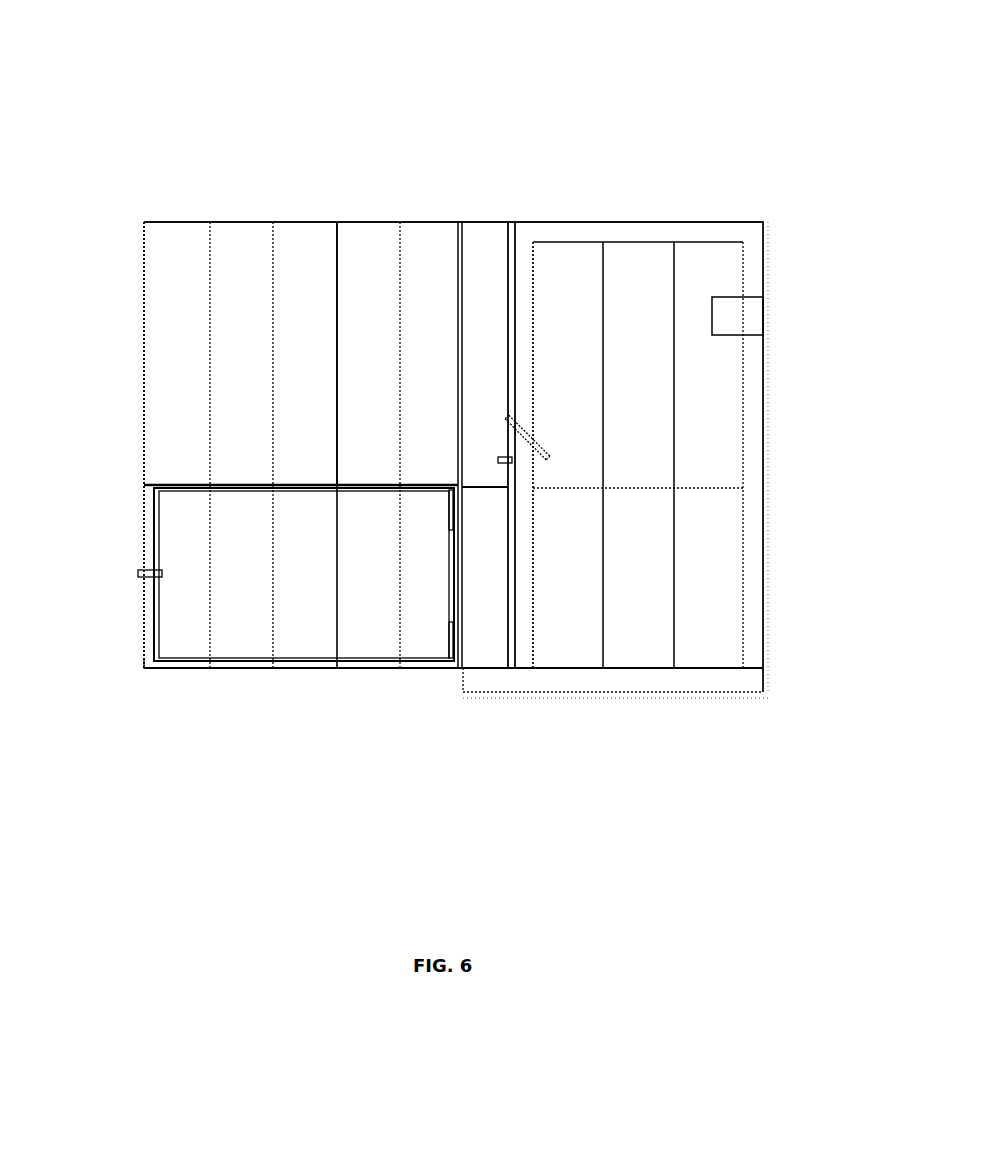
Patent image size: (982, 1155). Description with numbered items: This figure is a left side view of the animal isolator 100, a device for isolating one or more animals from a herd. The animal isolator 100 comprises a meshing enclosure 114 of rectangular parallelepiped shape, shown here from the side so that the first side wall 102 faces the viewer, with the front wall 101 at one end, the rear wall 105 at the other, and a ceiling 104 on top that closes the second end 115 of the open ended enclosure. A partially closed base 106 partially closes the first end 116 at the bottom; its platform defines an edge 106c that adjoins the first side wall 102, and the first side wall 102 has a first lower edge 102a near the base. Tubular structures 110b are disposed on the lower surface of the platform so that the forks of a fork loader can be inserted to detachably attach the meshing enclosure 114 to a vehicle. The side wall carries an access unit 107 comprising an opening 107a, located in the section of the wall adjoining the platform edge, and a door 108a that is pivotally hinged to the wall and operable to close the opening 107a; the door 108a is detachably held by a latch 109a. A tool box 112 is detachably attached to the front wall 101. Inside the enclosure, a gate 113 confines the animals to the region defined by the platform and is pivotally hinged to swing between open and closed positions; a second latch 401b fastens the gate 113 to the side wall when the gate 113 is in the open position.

The animal isolator 100 is at (414, 72).
The front wall 101 is at (758, 552).
The first side wall 102 is at (400, 245).
The first lower edge 102a is at (287, 670).
The ceiling 104 is at (293, 220).
The rear wall 105 is at (145, 337).
The partially closed base 106 is at (767, 668).
The edge 106c is at (677, 668).
The access unit 107 is at (681, 208).
The opening 107a is at (552, 265).
The door 108a is at (606, 228).
The latch 109a is at (537, 443).
The tubular structures 110b is at (552, 676).
The tool box 112 is at (730, 319).
The gate 113 is at (162, 622).
The meshing enclosure 114 is at (108, 658).
The second end 115 is at (463, 213).
The first end 116 is at (410, 695).
The second latch 401b is at (143, 568).